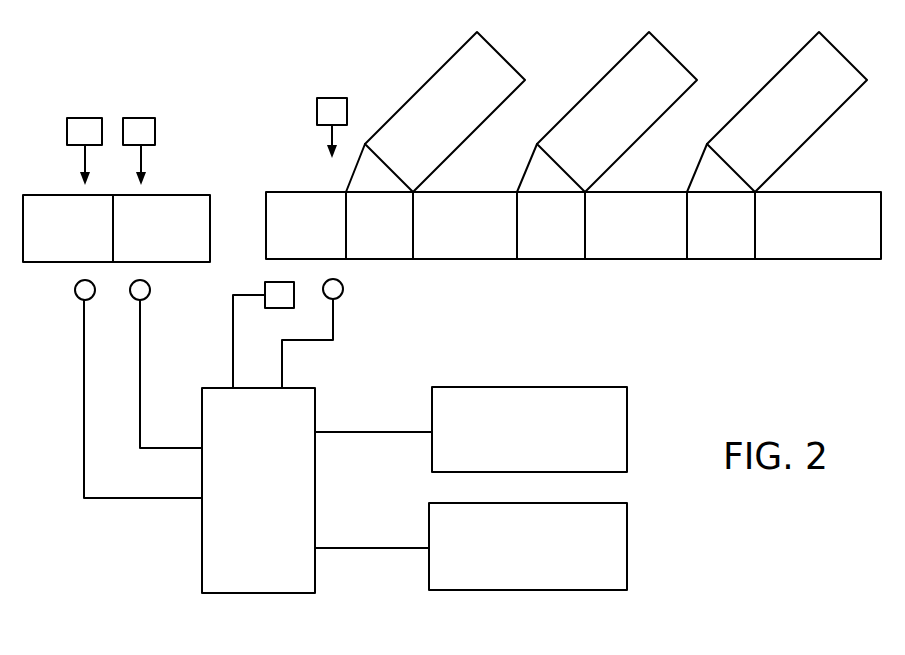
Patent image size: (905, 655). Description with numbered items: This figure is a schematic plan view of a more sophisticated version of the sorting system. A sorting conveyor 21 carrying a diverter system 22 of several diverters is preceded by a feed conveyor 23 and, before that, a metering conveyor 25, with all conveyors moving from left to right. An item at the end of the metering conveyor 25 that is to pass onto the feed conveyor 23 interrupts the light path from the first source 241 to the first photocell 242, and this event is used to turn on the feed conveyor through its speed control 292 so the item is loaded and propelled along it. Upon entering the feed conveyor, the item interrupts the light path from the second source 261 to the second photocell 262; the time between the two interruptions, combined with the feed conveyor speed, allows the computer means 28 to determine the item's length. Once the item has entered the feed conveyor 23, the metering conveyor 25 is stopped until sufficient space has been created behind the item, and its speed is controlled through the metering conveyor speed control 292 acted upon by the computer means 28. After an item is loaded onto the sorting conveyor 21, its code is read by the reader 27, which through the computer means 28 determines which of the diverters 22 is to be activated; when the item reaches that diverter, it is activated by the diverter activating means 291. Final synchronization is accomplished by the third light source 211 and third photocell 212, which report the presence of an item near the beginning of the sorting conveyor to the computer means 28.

The sorting conveyor 21 is at (827, 247).
The diverter system 22 is at (505, 73).
The third light source 211 is at (330, 106).
The third photocell 212 is at (344, 289).
The feed conveyor 23 is at (161, 228).
The metering conveyor 25 is at (68, 228).
The first source 241 is at (83, 130).
The first photocell 242 is at (75, 290).
The second source 261 is at (140, 128).
The second photocell 262 is at (150, 290).
The reader 27 is at (282, 298).
The computer means 28 is at (258, 490).
The diverter activating means 291 is at (612, 433).
The metering conveyor speed control 292 is at (615, 543).